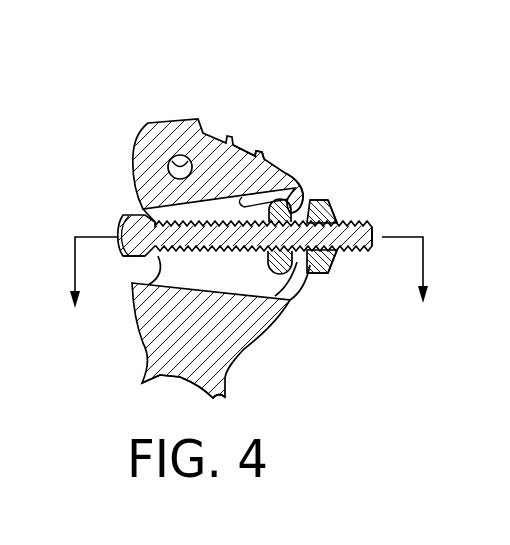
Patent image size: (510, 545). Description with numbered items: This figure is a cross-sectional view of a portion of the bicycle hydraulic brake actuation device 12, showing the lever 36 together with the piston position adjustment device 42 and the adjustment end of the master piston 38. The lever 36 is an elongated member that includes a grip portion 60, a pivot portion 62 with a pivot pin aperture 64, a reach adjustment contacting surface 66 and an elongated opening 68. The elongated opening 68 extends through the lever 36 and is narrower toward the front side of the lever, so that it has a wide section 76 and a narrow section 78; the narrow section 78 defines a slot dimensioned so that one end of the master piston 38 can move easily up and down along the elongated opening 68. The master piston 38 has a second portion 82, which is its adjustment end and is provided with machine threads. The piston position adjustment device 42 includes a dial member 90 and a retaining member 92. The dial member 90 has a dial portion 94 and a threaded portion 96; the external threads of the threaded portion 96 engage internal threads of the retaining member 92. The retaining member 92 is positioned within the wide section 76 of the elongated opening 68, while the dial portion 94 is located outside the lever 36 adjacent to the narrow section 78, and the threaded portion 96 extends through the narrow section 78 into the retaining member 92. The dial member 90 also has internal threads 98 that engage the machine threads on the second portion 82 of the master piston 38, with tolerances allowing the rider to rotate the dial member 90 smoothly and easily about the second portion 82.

The hydraulic brake actuation device 12 is at (308, 86).
The lever 36 is at (139, 136).
The master piston 38 is at (124, 270).
The piston position adjustment device 42 is at (351, 266).
The grip portion 60 is at (222, 397).
The pivot portion 62 is at (168, 166).
The pivot pin aperture 64 is at (181, 160).
The reach adjustment contacting surface 66 is at (246, 157).
The elongated opening 68 is at (284, 200).
The wide section 76 is at (213, 287).
The narrow section 78 is at (300, 278).
The second portion 82 is at (207, 240).
The dial member 90 is at (335, 205).
The retaining member 92 is at (291, 272).
The dial portion 94 is at (343, 201).
The threaded portion 96 is at (327, 209).
The internal threads 98 is at (366, 225).